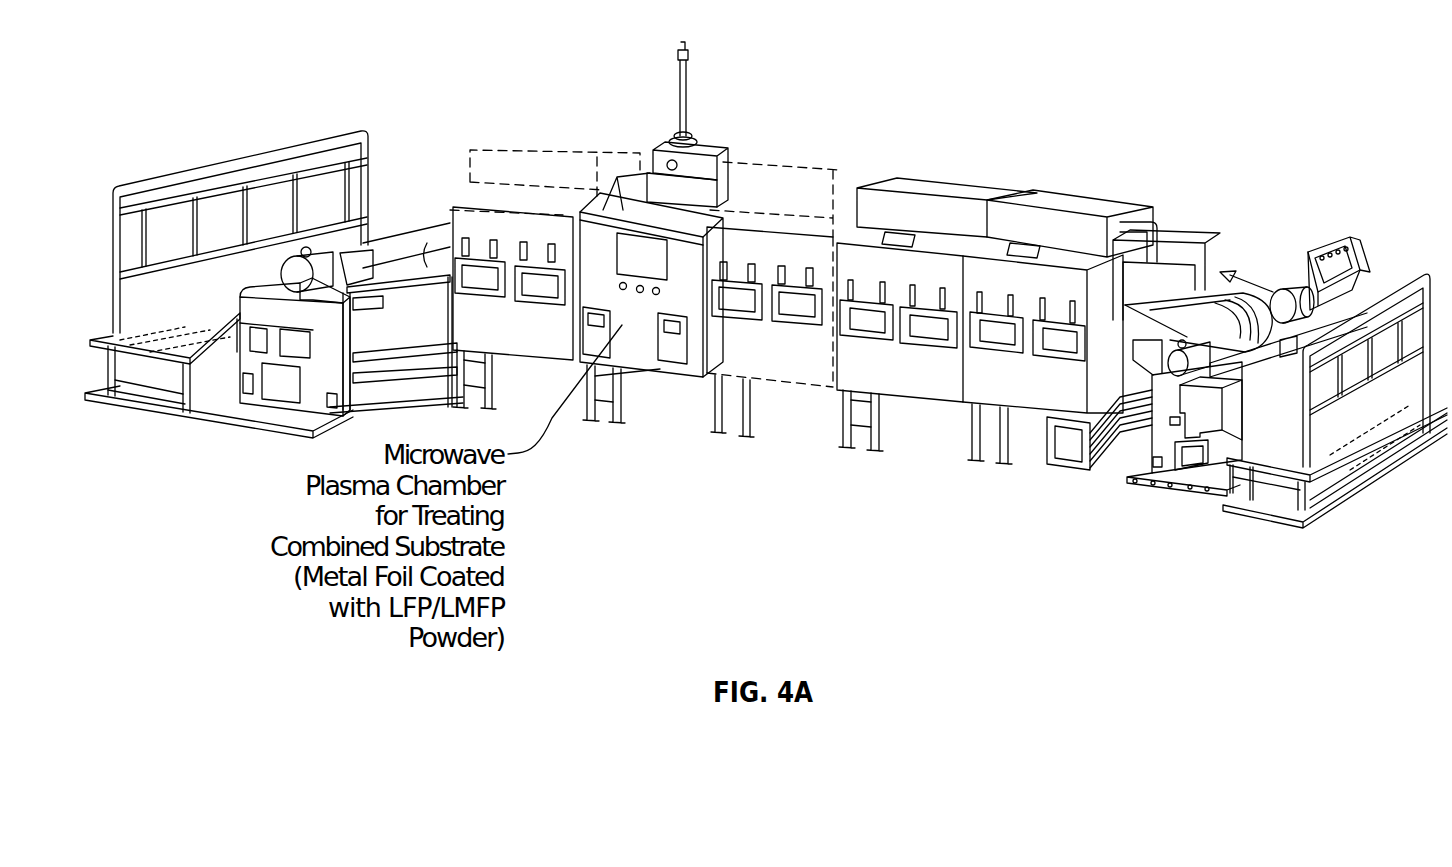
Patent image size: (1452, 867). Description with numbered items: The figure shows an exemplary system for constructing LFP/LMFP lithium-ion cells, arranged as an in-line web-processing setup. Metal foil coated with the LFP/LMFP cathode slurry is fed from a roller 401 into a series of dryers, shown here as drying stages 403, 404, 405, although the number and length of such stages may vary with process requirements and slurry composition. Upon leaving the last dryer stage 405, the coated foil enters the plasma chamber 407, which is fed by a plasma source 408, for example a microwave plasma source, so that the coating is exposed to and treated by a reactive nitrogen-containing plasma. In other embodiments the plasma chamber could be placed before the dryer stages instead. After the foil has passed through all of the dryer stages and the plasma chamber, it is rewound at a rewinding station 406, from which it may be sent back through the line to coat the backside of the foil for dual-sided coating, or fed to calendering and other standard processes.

The roller 401 is at (1351, 217).
The drying stage 403 is at (1087, 197).
The drying stage 404 is at (963, 185).
The drying stage 405 is at (831, 171).
The rewinding station 406 is at (244, 143).
The plasma chamber 407 is at (634, 220).
The plasma source 408 is at (689, 90).